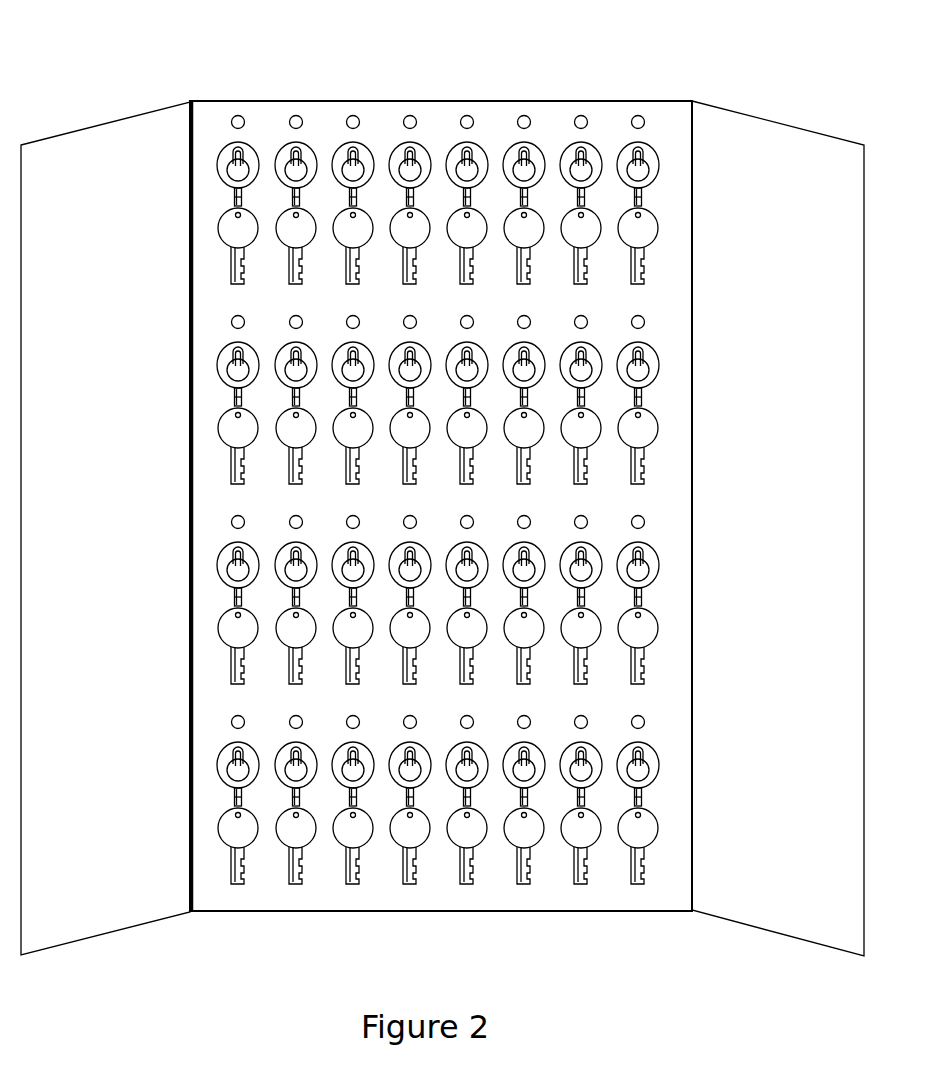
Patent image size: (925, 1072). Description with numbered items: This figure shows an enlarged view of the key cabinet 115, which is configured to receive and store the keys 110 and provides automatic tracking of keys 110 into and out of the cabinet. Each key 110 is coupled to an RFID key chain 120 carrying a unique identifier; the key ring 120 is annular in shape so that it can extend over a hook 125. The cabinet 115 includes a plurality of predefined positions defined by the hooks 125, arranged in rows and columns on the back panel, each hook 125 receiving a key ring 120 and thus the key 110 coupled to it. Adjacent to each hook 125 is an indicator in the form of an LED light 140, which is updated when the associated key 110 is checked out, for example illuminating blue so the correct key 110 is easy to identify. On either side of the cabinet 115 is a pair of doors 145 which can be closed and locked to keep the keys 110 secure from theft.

The key 110 is at (217, 231).
The key cabinet 115 is at (673, 97).
The RFID key chain 120 is at (216, 165).
The hook 125 is at (303, 148).
The LED light 140 is at (233, 113).
The door 145 is at (149, 905).